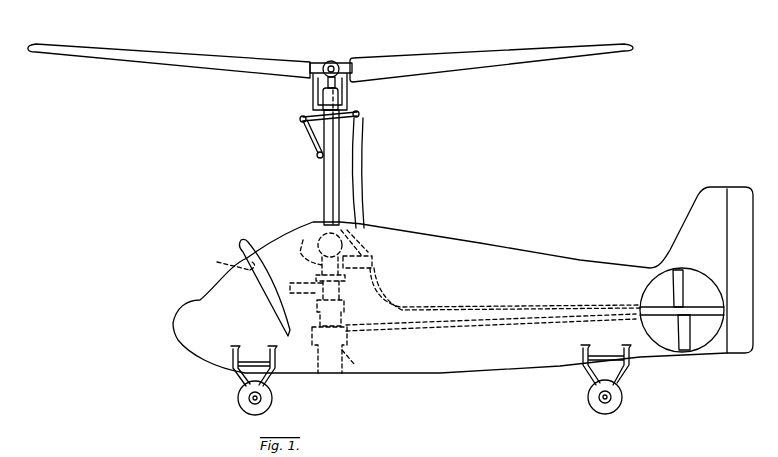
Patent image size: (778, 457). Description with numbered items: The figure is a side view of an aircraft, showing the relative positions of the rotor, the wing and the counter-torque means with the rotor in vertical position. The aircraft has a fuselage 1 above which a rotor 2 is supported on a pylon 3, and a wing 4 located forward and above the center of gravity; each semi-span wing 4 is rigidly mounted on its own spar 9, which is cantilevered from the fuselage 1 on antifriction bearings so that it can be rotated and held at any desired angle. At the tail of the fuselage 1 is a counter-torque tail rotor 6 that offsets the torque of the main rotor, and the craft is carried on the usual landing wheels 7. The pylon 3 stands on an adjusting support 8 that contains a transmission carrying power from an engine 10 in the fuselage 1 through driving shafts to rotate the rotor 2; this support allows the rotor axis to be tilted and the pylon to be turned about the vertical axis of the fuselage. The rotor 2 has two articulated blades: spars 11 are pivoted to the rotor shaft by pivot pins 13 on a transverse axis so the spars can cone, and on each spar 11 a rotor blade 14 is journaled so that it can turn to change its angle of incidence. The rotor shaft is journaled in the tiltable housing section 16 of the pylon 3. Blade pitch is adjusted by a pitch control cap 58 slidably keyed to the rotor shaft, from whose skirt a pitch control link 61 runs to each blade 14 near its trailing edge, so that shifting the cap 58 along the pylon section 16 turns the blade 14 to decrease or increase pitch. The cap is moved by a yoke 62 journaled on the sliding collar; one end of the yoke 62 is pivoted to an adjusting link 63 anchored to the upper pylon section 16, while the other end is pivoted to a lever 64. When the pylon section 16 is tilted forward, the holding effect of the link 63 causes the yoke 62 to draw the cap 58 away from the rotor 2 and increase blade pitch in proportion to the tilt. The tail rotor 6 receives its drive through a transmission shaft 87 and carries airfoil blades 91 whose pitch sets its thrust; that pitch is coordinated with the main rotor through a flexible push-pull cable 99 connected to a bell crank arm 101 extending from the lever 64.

The fuselage 1 is at (470, 246).
The rotor 2 is at (330, 54).
The pylon 3 is at (334, 151).
The wing 4 is at (243, 238).
The tail rotor 6 is at (682, 325).
The landing wheels 7 is at (273, 397).
The adjusting support 8 is at (304, 255).
The spar 9 is at (228, 262).
The engine 10 is at (358, 372).
The spar 11 is at (314, 65).
The pivot pin 13 is at (332, 61).
The rotor blade 14 is at (130, 58).
The tiltable housing section 16 is at (327, 169).
The pitch control cap 58 is at (323, 97).
The pitch control link 61 is at (348, 95).
The yoke 62 is at (301, 120).
The adjusting link 63 is at (312, 142).
The lever 64 is at (366, 166).
The transmission shaft 87 is at (410, 327).
The airfoil blade 91 is at (684, 292).
The push-pull cable 99 is at (405, 305).
The bell crank arm 101 is at (372, 248).